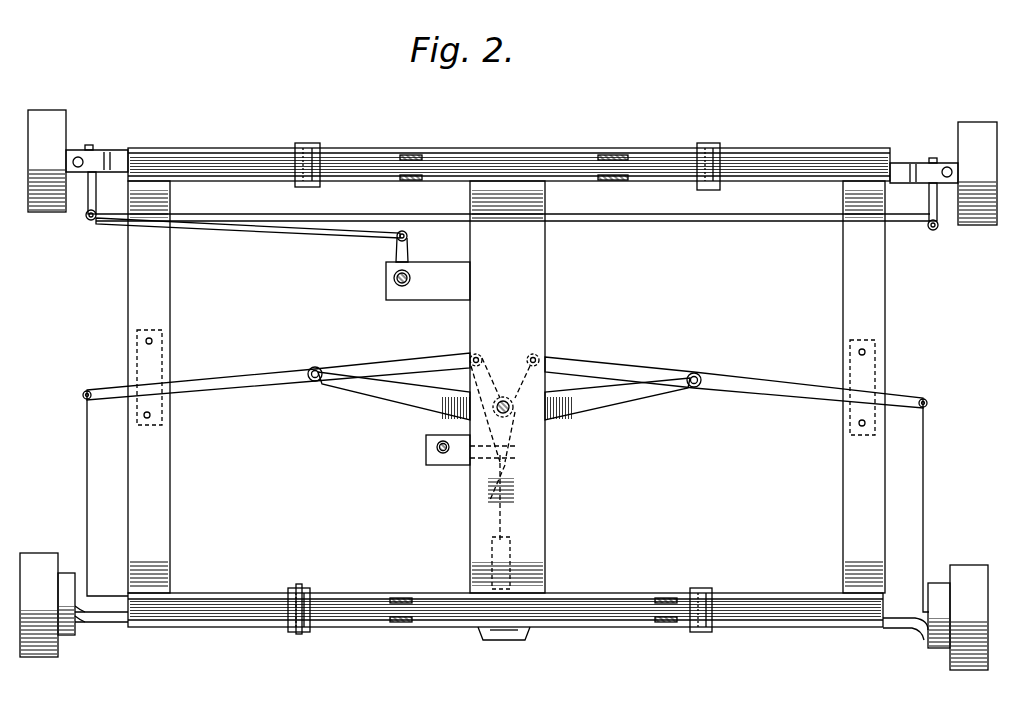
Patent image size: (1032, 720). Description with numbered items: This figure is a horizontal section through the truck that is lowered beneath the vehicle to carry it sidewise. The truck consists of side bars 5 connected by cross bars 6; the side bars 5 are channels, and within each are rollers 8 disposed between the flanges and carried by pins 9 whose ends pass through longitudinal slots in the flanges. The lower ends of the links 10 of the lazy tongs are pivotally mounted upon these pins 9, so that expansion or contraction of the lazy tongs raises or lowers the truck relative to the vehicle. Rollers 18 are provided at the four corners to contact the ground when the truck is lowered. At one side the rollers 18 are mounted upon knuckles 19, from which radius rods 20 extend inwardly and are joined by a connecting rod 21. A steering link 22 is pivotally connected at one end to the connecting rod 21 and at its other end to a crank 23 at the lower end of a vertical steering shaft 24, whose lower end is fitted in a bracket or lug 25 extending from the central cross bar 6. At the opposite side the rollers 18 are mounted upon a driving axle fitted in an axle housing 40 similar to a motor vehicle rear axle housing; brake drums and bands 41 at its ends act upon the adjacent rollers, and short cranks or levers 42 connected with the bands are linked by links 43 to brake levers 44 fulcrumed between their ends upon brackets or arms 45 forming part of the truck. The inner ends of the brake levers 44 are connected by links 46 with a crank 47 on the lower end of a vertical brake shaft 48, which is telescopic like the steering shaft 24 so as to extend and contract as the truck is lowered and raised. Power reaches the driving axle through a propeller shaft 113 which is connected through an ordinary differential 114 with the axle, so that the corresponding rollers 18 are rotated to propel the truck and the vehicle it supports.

The side bar 5 is at (262, 148).
The cross bar 6 is at (170, 530).
The roller 8 is at (300, 170).
The pin 9 is at (300, 593).
The link 10 is at (398, 617).
The roller 18 is at (32, 208).
The knuckle 19 is at (70, 150).
The radius rod 20 is at (88, 195).
The connecting rod 21 is at (710, 222).
The steering link 22 is at (310, 232).
The crank 23 is at (410, 252).
The steering shaft 24 is at (395, 283).
The bracket or lug 25 is at (447, 292).
The axle housing 40 is at (105, 624).
The brake drum and band 41 is at (68, 637).
The crank or lever 42 is at (912, 630).
The link 43 is at (85, 470).
The brake lever 44 is at (260, 385).
The bracket or arm 45 is at (398, 392).
The link 46 is at (490, 358).
The crank 47 is at (485, 455).
The brake shaft 48 is at (440, 455).
The propeller shaft 113 is at (500, 508).
The differential 114 is at (512, 642).